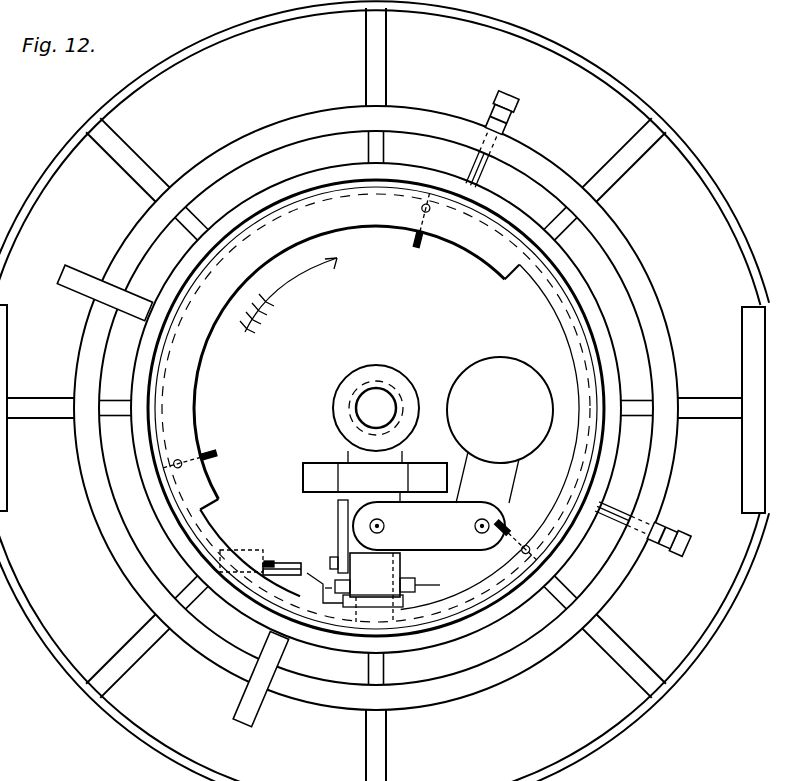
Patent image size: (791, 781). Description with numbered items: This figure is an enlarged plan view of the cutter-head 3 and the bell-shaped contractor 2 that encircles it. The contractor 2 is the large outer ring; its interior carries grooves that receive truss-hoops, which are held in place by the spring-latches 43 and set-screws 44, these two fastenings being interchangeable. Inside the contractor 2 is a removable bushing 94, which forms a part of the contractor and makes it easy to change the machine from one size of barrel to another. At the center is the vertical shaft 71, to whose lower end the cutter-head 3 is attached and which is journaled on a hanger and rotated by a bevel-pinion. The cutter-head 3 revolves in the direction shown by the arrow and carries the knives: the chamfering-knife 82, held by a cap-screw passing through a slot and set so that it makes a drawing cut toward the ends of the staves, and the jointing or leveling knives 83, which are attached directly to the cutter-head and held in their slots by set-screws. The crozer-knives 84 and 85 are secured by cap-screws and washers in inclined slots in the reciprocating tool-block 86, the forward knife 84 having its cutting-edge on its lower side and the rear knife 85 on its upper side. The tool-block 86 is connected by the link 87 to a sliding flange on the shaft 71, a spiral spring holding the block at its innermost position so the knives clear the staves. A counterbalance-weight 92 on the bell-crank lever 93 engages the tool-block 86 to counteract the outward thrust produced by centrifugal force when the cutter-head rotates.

The bell-shaped contractor 2 is at (384, 391).
The cutter-head 3 is at (386, 417).
The spring-latches 43 is at (390, 397).
The set-screws 44 is at (581, 319).
The vertical shaft 71 is at (376, 414).
The chamfering-knife 82 is at (262, 557).
The jointing or leveling knives 83 is at (350, 378).
The crozer-knife 84 is at (305, 606).
The crozer-knife 85 is at (448, 580).
The reciprocating tool-block 86 is at (375, 587).
The link 87 is at (375, 518).
The counterbalance-weight 92 is at (500, 410).
The bell-crank lever 93 is at (436, 501).
The removable bushing 94 is at (604, 340).